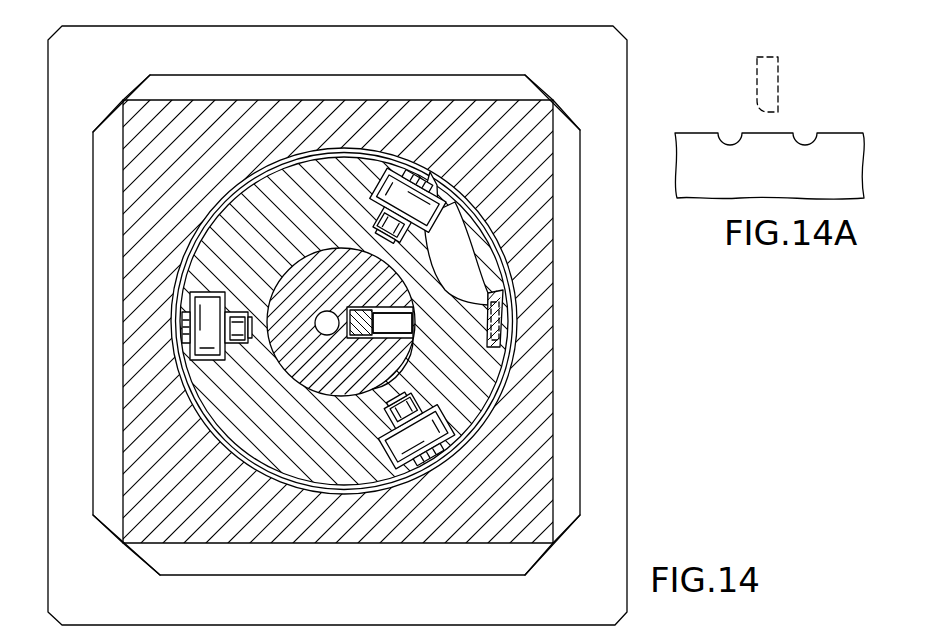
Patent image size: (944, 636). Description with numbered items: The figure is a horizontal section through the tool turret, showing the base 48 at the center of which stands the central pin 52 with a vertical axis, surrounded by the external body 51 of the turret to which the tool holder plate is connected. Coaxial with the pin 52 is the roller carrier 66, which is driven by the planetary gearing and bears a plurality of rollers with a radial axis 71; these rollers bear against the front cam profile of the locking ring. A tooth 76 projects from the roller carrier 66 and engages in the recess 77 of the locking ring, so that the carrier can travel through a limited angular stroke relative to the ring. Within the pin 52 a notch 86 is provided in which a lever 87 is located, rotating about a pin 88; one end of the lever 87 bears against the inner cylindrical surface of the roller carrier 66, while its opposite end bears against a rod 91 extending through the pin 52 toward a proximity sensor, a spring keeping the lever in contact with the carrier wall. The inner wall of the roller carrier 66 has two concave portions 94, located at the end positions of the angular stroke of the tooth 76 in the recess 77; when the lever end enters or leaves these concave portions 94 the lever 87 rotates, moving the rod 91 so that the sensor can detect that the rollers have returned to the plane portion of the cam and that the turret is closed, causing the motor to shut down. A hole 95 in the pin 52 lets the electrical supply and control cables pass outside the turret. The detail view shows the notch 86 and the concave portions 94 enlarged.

In FIG. 14, the base 48 is at (612, 498).
In FIG. 14, the external body 51 is at (527, 478).
In FIG. 14, the central pin 52 is at (292, 336).
In FIG. 14, the roller carrier 66 is at (288, 200).
In FIG. 14, the roller with a radial axis 71 is at (193, 354).
In FIG. 14, the tooth 76 is at (507, 295).
In FIG. 14, the recess 77 is at (463, 224).
In FIG. 14, the notch 86 is at (370, 342).
In FIG. 14A, the notch 86 is at (777, 113).
In FIG. 14, the lever 87 is at (413, 326).
In FIG. 14, the pin 88 is at (413, 307).
In FIG. 14, the rod 91 is at (343, 311).
In FIG. 14A, the concave portions 94 is at (798, 148).
In FIG. 14, the hole 95 is at (275, 367).